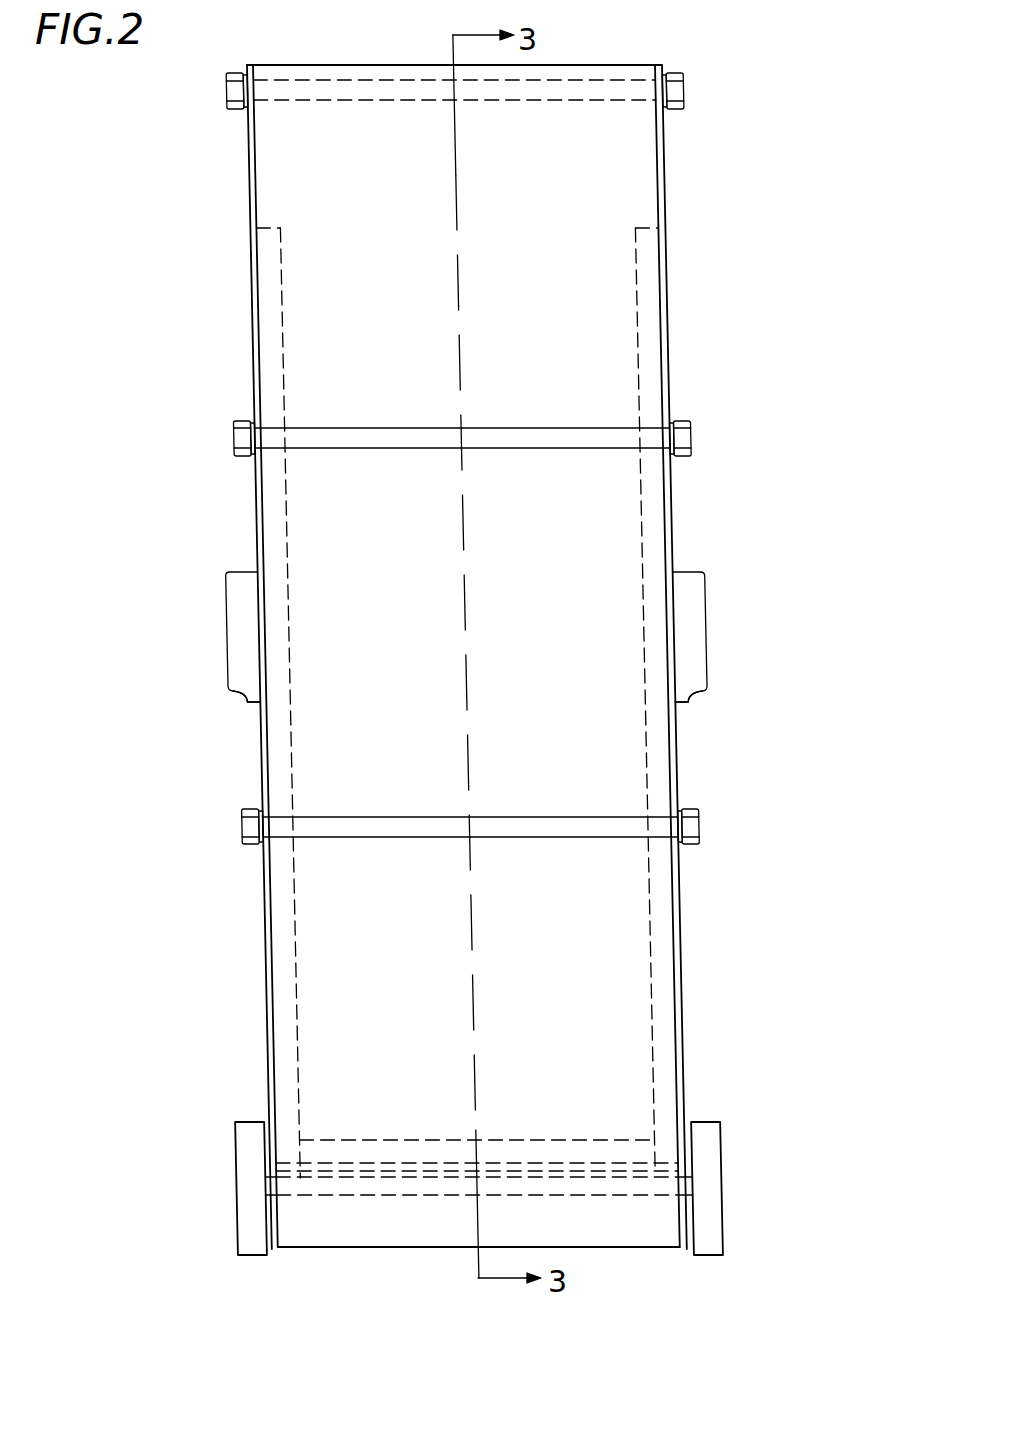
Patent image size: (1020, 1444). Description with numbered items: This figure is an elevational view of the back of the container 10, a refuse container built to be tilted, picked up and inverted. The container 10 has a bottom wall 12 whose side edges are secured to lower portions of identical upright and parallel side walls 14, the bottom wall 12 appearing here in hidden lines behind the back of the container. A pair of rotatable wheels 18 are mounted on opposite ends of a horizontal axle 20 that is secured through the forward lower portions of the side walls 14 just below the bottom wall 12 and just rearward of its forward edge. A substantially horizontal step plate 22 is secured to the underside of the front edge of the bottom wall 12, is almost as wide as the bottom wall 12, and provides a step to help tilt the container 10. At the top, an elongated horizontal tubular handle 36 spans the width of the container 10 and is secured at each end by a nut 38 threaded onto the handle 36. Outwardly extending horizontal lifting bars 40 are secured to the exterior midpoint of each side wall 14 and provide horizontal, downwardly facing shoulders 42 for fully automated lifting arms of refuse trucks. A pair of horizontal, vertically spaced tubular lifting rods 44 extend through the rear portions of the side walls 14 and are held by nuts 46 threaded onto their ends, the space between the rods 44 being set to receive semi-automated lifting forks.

The container 10 is at (633, 65).
The bottom wall 12 is at (358, 1140).
The side walls 14 is at (266, 1040).
The rotatable wheels 18 is at (248, 1120).
The horizontal axle 20 is at (272, 1183).
The step plate 22 is at (448, 1178).
The tubular handle 36 is at (421, 82).
The nut 38 is at (225, 90).
The lifting bars 40 is at (226, 603).
The shoulders 42 is at (246, 701).
The tubular lifting rods 44 is at (340, 428).
The nuts 46 is at (233, 437).